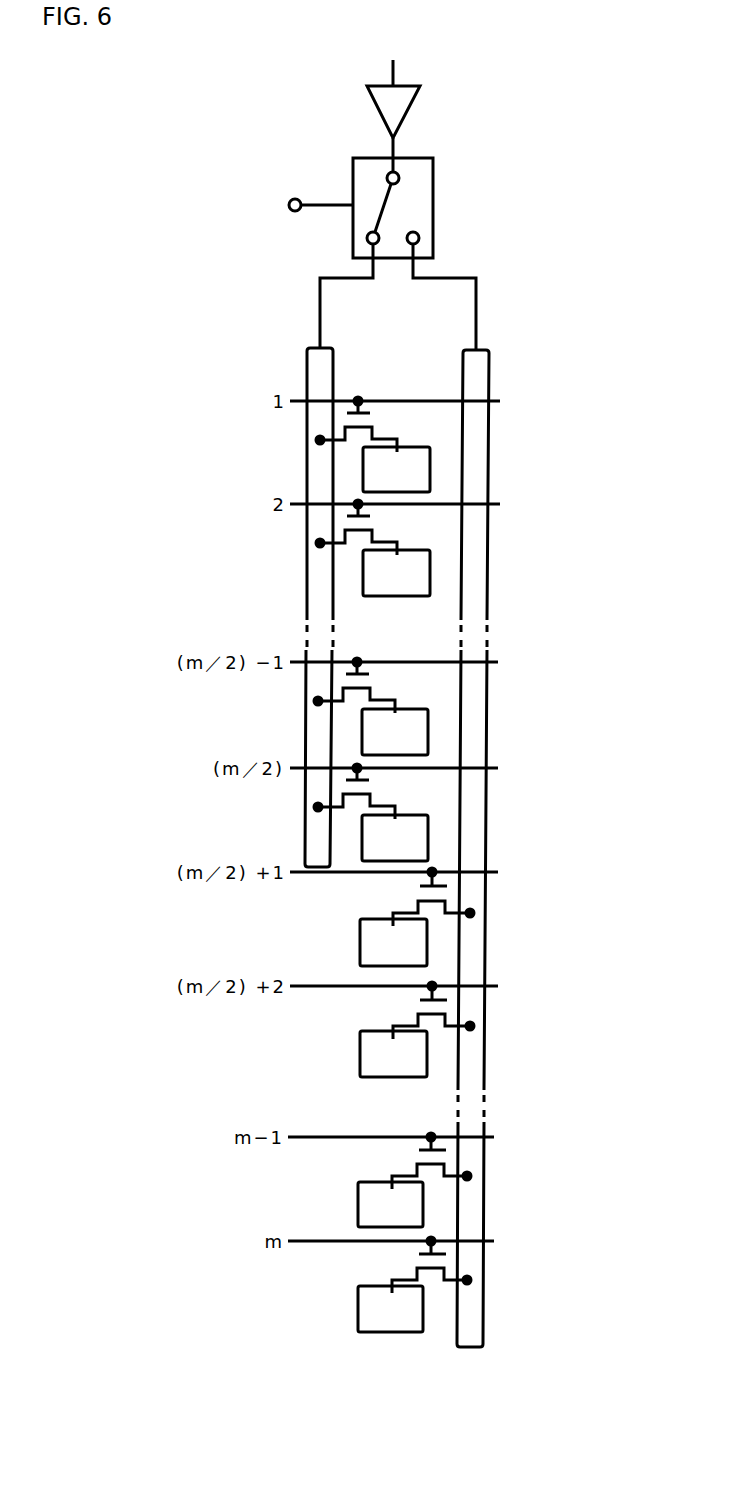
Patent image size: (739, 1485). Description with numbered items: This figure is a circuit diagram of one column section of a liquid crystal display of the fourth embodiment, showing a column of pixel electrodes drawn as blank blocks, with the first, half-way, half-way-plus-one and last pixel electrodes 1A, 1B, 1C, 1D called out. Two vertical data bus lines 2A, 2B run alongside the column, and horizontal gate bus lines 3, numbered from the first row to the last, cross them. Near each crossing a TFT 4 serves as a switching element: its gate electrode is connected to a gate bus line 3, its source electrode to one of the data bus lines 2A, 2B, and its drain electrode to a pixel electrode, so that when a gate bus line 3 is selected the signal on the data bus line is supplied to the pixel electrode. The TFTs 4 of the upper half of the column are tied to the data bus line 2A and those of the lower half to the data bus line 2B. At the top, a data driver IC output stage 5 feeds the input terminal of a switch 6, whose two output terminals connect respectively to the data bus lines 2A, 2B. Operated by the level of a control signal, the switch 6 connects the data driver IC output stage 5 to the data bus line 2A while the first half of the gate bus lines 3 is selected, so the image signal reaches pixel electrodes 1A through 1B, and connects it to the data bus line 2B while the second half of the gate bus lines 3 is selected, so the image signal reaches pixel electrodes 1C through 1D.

The pixel electrode 1A is at (432, 467).
The pixel electrode 1B is at (407, 848).
The pixel electrode 1C is at (413, 946).
The pixel electrode 1D is at (408, 1320).
The data bus line 2A is at (320, 380).
The data bus line 2B is at (475, 370).
The gate bus line 3 is at (498, 402).
The TFT 4 is at (365, 412).
The data driver IC output stage 5 is at (415, 107).
The switch 6 is at (433, 218).